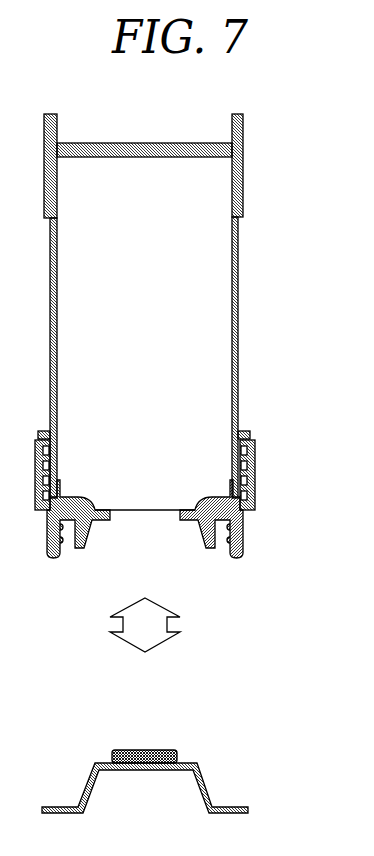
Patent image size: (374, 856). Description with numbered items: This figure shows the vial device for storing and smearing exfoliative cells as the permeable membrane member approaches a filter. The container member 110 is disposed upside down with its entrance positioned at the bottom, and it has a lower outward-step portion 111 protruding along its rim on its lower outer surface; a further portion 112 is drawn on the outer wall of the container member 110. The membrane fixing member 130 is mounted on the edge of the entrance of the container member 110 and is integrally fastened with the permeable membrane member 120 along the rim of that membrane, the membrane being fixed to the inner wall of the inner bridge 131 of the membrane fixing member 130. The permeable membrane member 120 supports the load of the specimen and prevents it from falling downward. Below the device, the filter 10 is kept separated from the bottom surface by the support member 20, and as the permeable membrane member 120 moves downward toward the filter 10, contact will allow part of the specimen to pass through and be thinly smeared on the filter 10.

The filter 10 is at (117, 750).
The support member 20 is at (88, 781).
The container member 110 is at (179, 306).
The lower outward-step portion 111 is at (244, 216).
The flange 112 is at (251, 434).
The permeable membrane member 120 is at (146, 509).
The membrane fixing member 130 is at (183, 517).
The inner bridge 131 is at (80, 549).